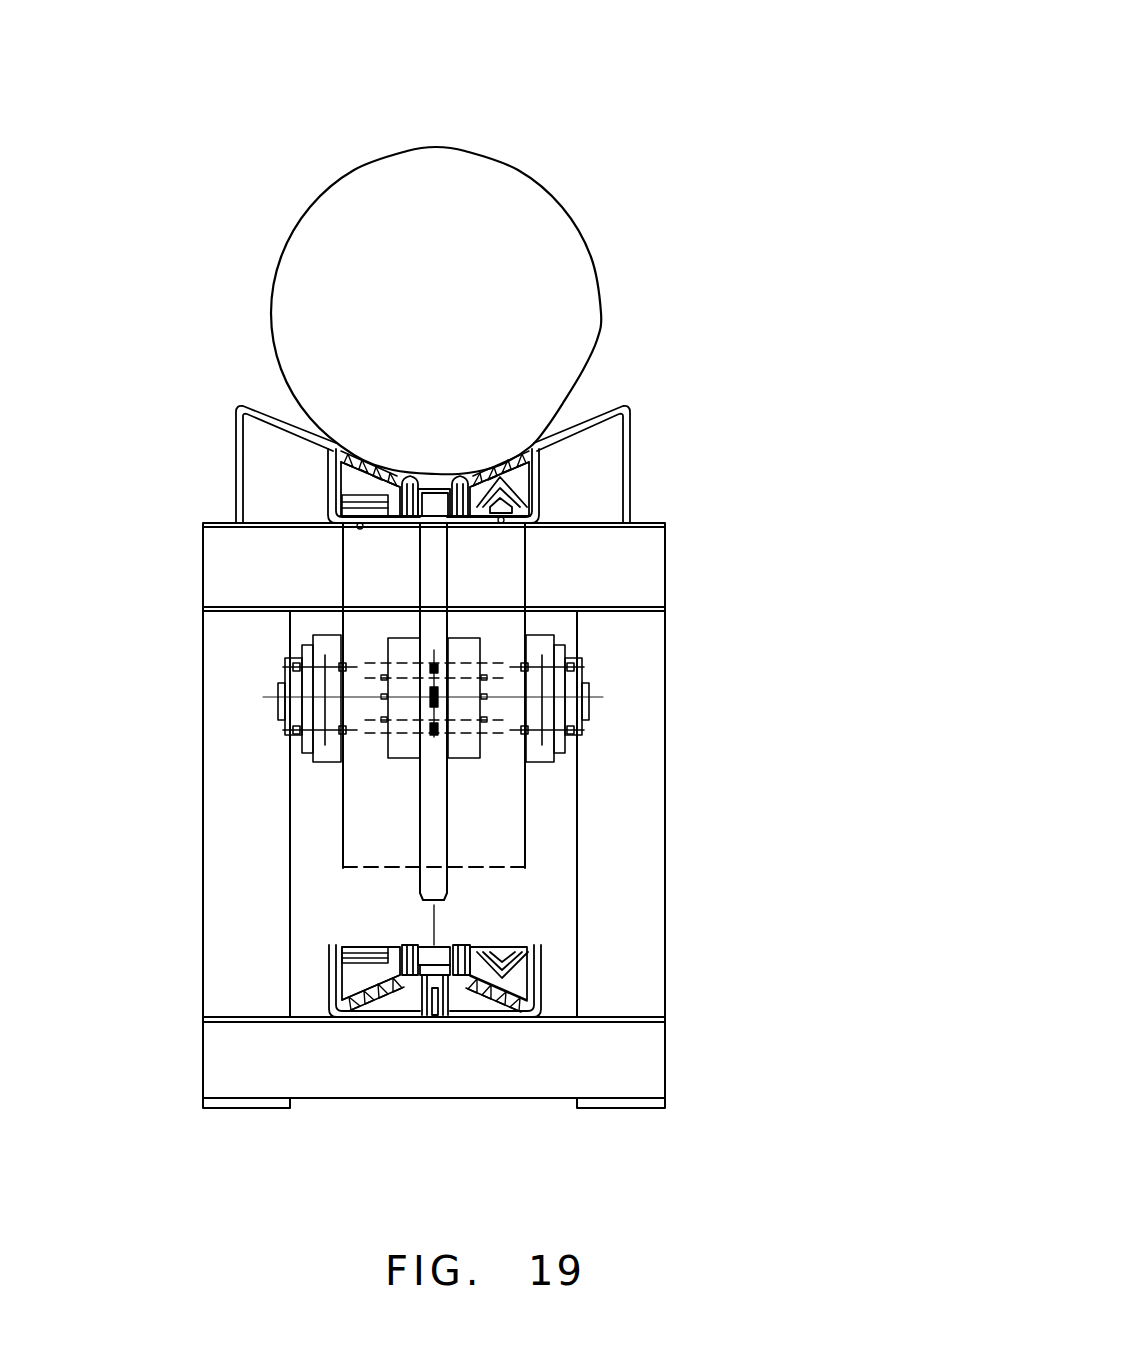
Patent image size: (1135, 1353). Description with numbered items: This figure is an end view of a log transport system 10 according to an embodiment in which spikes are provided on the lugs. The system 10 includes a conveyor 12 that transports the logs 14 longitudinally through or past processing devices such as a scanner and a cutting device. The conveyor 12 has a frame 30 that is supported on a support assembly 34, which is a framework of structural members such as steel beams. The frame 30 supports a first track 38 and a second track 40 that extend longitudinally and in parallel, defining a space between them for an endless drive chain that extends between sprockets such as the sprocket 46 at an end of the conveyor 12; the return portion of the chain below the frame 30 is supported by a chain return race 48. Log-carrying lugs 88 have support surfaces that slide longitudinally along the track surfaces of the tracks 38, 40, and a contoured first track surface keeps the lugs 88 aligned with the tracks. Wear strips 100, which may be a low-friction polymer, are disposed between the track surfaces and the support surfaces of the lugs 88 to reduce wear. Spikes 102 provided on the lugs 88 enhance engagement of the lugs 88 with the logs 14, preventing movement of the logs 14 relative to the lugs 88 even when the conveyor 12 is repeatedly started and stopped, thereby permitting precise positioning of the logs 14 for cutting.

The log transport system 10 is at (670, 128).
The conveyor 12 is at (675, 462).
The log 14 is at (312, 200).
The frame 30 is at (545, 468).
The support assembly 34 is at (538, 527).
The first track 38 is at (556, 532).
The second track 40 is at (345, 529).
The sprocket 46 is at (448, 823).
The chain return race 48 is at (548, 977).
The log-carrying lug 88 is at (540, 445).
The wear strip 100 is at (360, 511).
The spike 102 is at (472, 450).